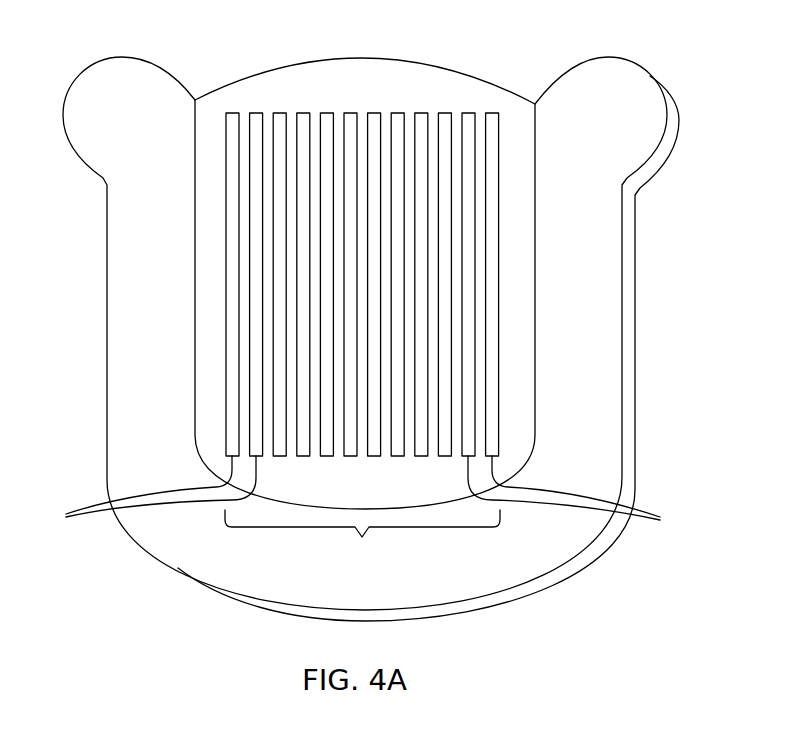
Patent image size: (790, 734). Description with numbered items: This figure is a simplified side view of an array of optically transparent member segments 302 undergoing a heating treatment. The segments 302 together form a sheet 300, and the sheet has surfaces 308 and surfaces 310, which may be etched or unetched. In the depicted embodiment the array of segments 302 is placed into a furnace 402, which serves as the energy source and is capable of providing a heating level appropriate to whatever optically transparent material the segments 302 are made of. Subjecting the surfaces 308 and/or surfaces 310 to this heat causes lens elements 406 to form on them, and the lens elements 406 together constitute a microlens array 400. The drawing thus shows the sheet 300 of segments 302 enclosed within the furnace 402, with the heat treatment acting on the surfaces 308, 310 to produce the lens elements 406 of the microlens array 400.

The sheet 300 is at (210, 112).
The optically transparent member segments 302 is at (502, 263).
The surfaces 308 is at (581, 494).
The surfaces 310 is at (474, 113).
The microlens array 400 is at (362, 538).
The furnace 402 is at (622, 348).
The lens elements 406 is at (340, 32).